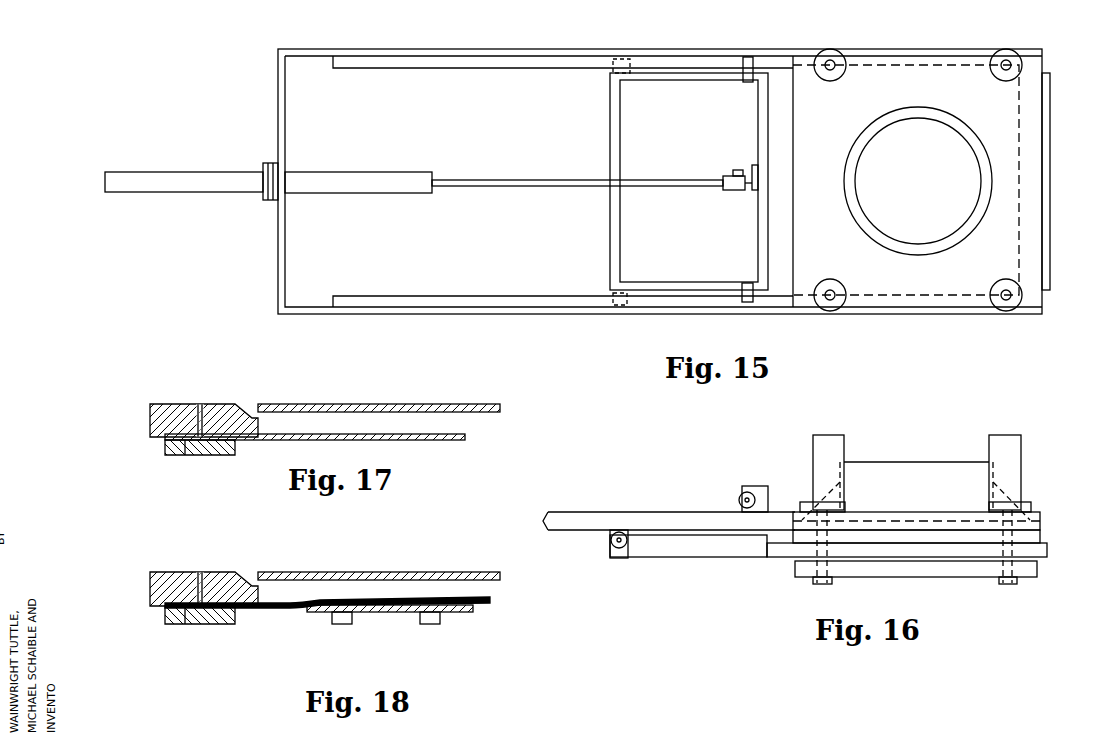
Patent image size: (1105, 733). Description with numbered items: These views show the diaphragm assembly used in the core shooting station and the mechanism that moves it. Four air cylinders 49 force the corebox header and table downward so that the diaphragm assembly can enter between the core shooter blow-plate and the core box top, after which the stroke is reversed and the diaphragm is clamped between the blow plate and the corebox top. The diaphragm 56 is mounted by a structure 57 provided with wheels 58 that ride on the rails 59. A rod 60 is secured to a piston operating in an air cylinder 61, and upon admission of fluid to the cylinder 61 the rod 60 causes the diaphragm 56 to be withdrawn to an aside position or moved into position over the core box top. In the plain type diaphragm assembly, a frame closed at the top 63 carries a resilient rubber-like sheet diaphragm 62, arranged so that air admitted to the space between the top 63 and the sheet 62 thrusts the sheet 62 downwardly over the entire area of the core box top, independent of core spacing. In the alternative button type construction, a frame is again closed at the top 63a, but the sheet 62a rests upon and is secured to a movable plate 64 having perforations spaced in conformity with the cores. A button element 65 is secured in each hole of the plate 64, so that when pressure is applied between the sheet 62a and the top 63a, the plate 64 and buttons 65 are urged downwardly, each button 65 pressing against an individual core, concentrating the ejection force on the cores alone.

In FIG. 15, the air cylinders 49 is at (842, 56).
In FIG. 16, the diaphragm 56 is at (1040, 552).
In FIG. 15, the mounting structure 57 is at (620, 255).
In FIG. 15, the wheels 58 is at (638, 62).
In FIG. 16, the wheels 58 is at (740, 500).
In FIG. 15, the rails 59 is at (500, 70).
In FIG. 16, the rails 59 is at (572, 513).
In FIG. 15, the rod 60 is at (510, 180).
In FIG. 15, the air cylinder 61 is at (178, 172).
In FIG. 17, the resilient sheet diaphragm 62 is at (392, 436).
In FIG. 18, the sheet 62a is at (385, 600).
In FIG. 17, the frame top 63 is at (405, 406).
In FIG. 18, the frame top 63a is at (372, 575).
In FIG. 18, the movable plate 64 is at (470, 612).
In FIG. 18, the button element 65 is at (342, 624).